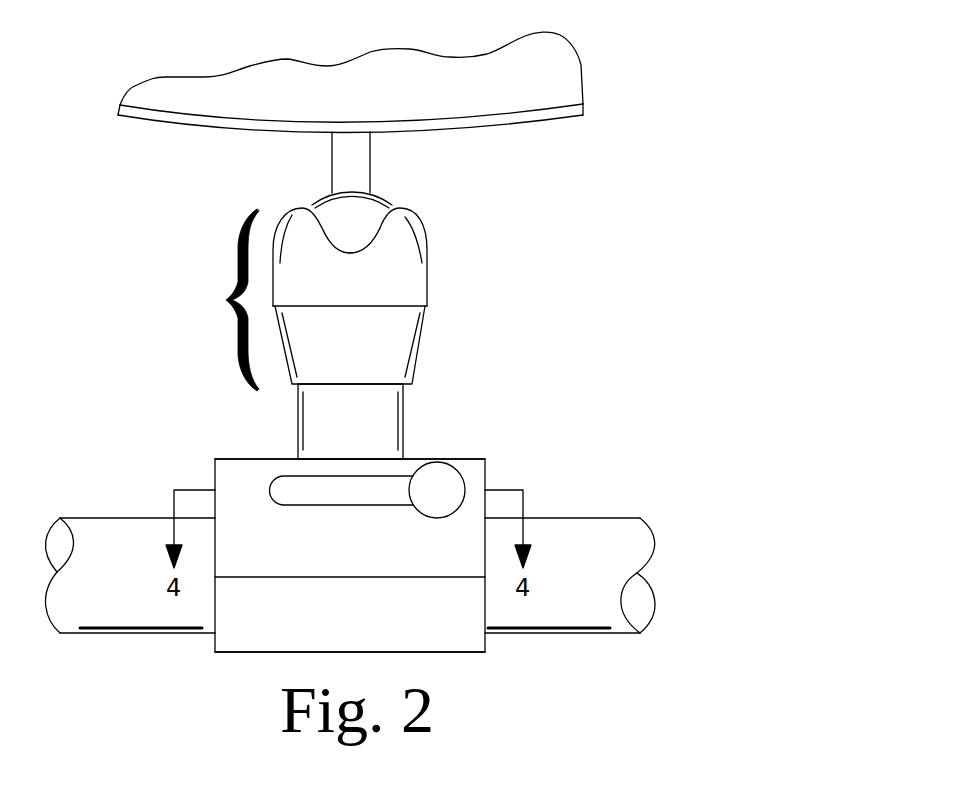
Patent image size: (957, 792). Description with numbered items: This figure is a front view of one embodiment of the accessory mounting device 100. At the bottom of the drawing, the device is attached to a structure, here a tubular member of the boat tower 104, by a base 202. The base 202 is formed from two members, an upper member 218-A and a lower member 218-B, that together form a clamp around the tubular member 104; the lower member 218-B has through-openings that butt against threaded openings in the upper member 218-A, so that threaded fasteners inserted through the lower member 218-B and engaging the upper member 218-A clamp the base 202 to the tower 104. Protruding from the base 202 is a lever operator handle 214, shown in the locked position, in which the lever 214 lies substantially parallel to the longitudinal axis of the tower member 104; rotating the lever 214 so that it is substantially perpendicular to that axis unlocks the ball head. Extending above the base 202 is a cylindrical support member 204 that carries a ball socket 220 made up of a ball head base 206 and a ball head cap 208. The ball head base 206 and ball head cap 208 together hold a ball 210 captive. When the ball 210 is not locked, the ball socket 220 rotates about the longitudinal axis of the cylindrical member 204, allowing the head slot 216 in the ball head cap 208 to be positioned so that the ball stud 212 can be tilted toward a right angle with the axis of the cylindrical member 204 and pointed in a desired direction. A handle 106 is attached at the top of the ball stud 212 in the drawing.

The accessory mounting device 100 is at (683, 297).
The tubular member of the boat tower 104 is at (60, 518).
The handle 106 is at (530, 126).
The base 202 is at (472, 440).
The cylindrical member 204 is at (408, 403).
The ball head base 206 is at (425, 330).
The ball head cap 208 is at (425, 232).
The ball 210 is at (387, 197).
The ball stud 212 is at (330, 157).
The lever operator handle 214 is at (422, 518).
The head slot 216 is at (362, 255).
The upper member 218-A is at (215, 473).
The lower member 218-B is at (215, 638).
The ball socket 220 is at (213, 300).